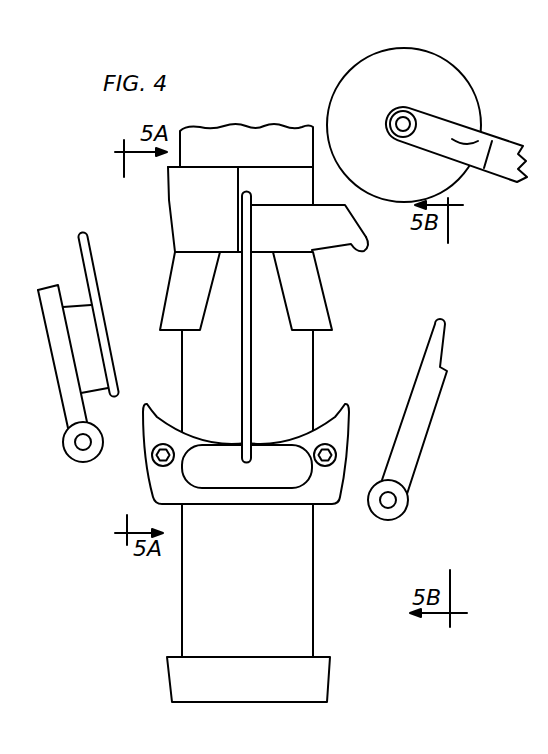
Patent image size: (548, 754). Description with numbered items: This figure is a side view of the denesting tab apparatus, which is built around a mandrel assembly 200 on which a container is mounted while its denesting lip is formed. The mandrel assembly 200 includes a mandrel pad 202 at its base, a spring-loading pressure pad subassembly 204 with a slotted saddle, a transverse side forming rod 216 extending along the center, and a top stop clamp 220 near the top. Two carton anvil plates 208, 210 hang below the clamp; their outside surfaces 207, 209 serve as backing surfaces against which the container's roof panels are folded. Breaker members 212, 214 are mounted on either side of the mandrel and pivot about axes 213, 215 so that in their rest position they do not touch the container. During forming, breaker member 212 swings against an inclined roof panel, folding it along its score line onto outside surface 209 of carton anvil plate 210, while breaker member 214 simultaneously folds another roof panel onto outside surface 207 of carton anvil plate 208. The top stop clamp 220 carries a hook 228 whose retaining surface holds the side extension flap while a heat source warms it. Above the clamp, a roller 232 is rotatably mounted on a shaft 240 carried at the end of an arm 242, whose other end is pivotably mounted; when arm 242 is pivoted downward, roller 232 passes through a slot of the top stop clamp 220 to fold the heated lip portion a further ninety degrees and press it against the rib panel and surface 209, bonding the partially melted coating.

The mandrel assembly 200 is at (299, 79).
The mandrel pad 202 is at (273, 691).
The spring-loading pressure pad subassembly 204 is at (333, 505).
The outside surface of carton anvil plate 207 is at (167, 296).
The carton anvil plate 208 is at (205, 316).
The outside surface of carton anvil plate 209 is at (332, 308).
The carton anvil plate 210 is at (318, 311).
The breaker member 212 is at (418, 405).
The axis 213 is at (391, 520).
The breaker member 214 is at (78, 248).
The axis 215 is at (88, 461).
The transverse side forming rod 216 is at (250, 398).
The top stop clamp 220 is at (322, 236).
The hook 228 is at (352, 252).
The roller 232 is at (372, 70).
The shaft 240 is at (403, 117).
The arm 242 is at (487, 138).